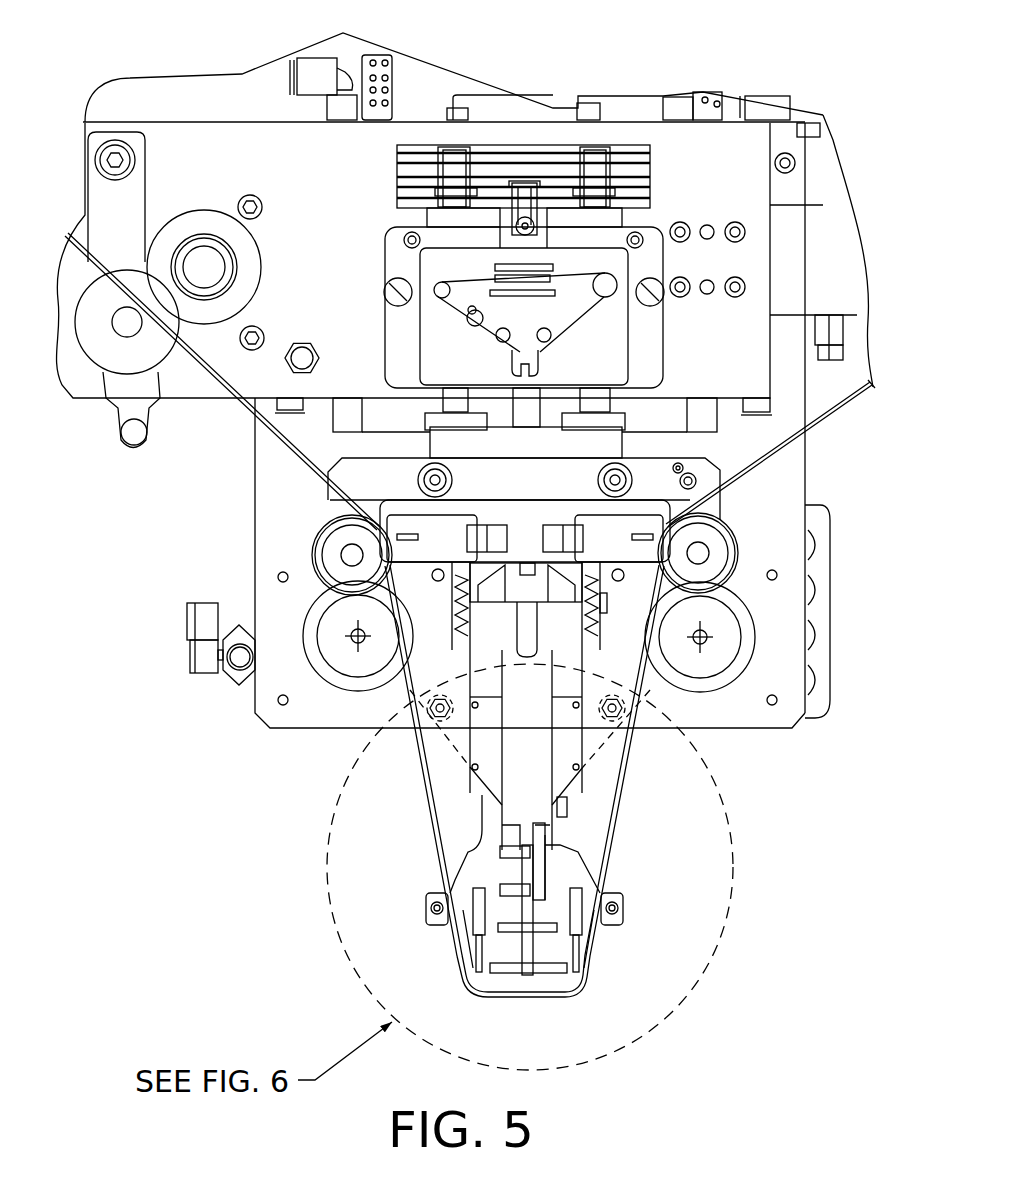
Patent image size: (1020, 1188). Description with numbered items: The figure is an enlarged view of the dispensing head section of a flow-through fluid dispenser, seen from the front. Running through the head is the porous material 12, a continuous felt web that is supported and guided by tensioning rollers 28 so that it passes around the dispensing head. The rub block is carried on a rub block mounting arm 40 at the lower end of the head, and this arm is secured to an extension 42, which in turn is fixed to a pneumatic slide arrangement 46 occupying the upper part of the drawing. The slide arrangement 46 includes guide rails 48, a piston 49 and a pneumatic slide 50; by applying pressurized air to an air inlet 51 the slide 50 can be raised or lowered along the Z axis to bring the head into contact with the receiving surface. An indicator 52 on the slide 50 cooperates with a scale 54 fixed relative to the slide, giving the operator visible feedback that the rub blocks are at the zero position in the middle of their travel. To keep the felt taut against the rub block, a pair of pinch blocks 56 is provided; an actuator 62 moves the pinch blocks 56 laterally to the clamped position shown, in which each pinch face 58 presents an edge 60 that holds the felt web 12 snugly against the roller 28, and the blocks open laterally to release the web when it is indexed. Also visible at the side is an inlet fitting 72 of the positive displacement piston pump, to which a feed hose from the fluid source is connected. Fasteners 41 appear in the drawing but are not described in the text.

The porous material 12 is at (270, 428).
The tensioning rollers 28 is at (342, 556).
The rub block mounting arm 40 is at (527, 955).
The fasteners 41 is at (505, 851).
The extension 42 is at (538, 744).
The pneumatic slide arrangement 46 is at (360, 300).
The guide rails 48 is at (448, 203).
The piston 49 is at (526, 400).
The pneumatic slide 50 is at (607, 228).
The air inlet 51 is at (525, 193).
The indicator 52 is at (447, 185).
The scale 54 is at (392, 159).
The pinch blocks 56 is at (448, 530).
The pinch faces 58 is at (407, 525).
The edge 60 is at (336, 522).
The actuator 62 is at (557, 533).
The inlet fitting 72 is at (200, 622).